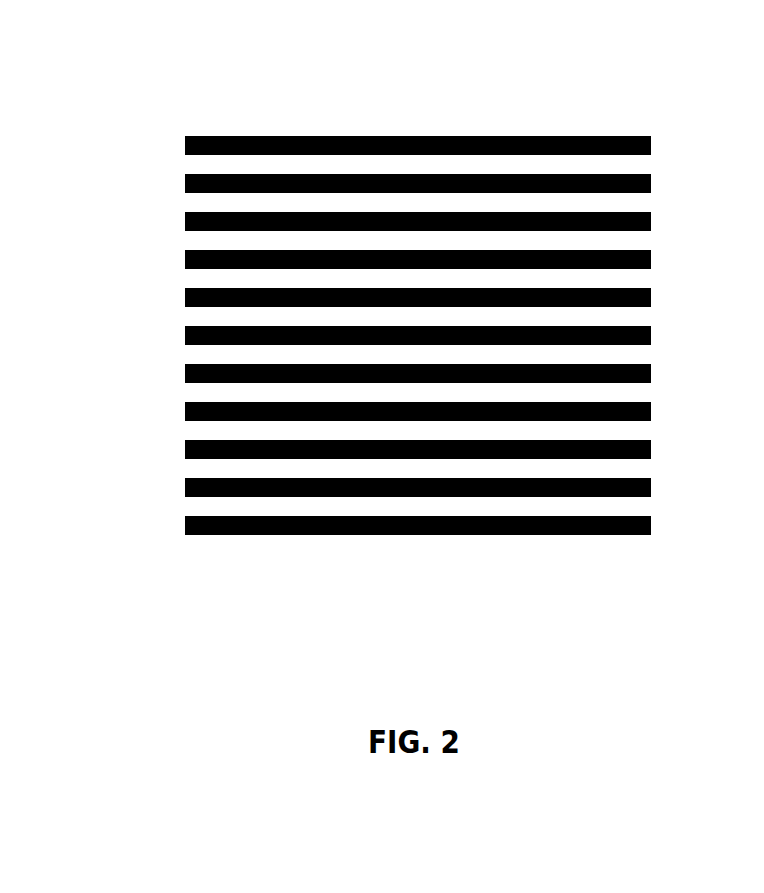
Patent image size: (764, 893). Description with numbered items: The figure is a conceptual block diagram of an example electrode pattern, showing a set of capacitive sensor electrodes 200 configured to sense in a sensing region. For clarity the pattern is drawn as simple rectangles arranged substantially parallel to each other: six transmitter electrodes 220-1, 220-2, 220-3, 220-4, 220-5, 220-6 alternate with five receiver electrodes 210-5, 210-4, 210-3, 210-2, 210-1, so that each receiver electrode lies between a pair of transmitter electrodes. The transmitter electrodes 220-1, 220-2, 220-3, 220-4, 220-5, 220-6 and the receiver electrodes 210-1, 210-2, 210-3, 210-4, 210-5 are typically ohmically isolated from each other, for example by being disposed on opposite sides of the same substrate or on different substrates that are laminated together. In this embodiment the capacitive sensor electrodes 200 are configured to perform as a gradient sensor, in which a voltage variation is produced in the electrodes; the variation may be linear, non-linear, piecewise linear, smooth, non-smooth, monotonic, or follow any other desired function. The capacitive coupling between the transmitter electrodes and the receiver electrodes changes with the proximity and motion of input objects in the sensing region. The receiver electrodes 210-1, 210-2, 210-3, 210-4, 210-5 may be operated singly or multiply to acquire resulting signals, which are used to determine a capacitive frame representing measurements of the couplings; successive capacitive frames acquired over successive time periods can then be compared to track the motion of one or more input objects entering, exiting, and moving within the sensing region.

The capacitive sensor electrodes 200 is at (348, 39).
The transmitter electrode 220-1 is at (185, 152).
The transmitter electrode 220-2 is at (185, 228).
The transmitter electrode 220-3 is at (185, 304).
The transmitter electrode 220-4 is at (185, 380).
The transmitter electrode 220-5 is at (185, 456).
The transmitter electrode 220-6 is at (185, 532).
The receiver electrode 210-1 is at (651, 482).
The receiver electrode 210-2 is at (651, 406).
The receiver electrode 210-3 is at (651, 330).
The receiver electrode 210-4 is at (651, 254).
The receiver electrode 210-5 is at (651, 178).